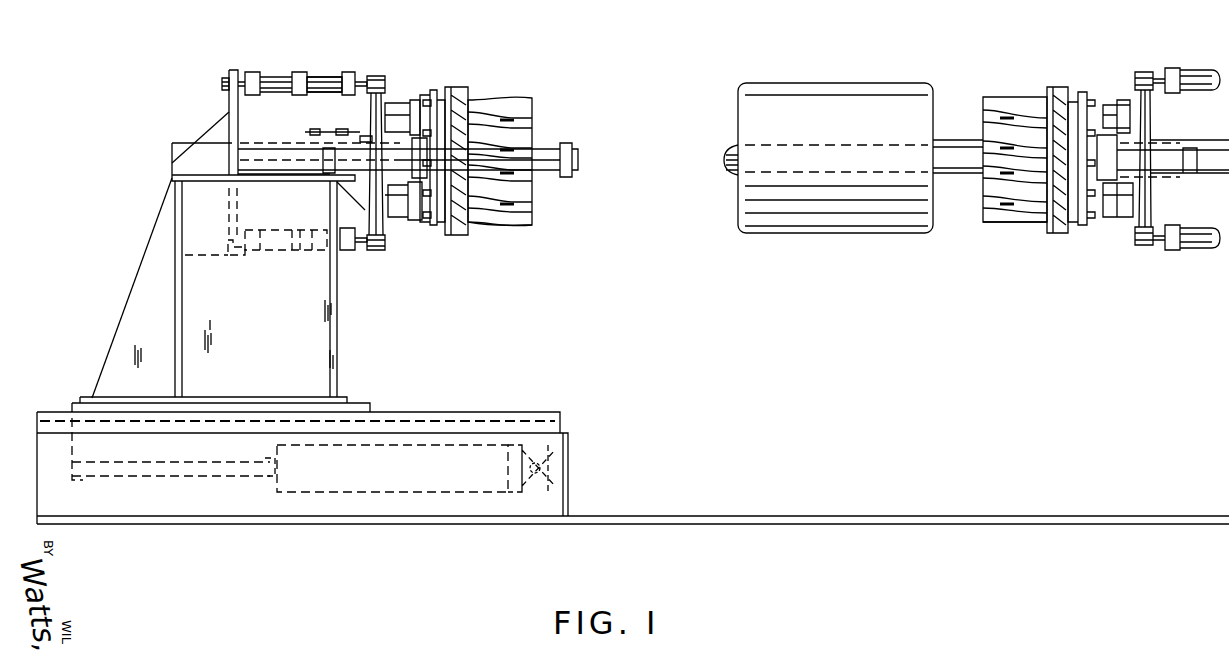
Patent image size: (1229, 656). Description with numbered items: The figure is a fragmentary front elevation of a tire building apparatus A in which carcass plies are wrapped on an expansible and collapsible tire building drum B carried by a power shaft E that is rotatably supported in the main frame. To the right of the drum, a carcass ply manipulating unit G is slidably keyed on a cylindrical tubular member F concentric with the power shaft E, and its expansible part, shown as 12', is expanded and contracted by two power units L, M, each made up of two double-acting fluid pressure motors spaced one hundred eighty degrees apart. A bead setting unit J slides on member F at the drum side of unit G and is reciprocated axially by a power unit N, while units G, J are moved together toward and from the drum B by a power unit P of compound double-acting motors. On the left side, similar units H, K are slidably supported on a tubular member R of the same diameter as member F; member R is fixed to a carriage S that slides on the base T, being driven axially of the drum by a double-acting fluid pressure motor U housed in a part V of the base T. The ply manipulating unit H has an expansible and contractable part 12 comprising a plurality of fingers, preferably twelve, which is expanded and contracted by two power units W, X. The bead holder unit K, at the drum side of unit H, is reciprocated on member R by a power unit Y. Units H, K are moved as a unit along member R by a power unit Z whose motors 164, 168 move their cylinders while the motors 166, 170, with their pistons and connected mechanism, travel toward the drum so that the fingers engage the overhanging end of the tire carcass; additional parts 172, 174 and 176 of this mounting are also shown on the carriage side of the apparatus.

The support post nut 172 is at (240, 68).
The motor 164 is at (265, 72).
The power unit Z is at (312, 65).
The motor 166 is at (338, 72).
The upright support post 176 is at (229, 100).
The power unit X is at (395, 108).
The bead holder unit K is at (463, 83).
The carcass ply manipulating unit H is at (504, 93).
The tubular member R is at (548, 146).
The power unit W is at (416, 229).
The expansible and contractable part 12 is at (505, 236).
The power unit Y is at (322, 165).
The hidden bracket 174 is at (240, 255).
The motor 168 is at (267, 250).
The motor 170 is at (347, 252).
The carriage S is at (337, 352).
The part of the base V is at (463, 402).
The tire building apparatus A is at (576, 469).
The fluid pressure-actuated motor U is at (343, 497).
The base T is at (790, 506).
The power shaft E is at (729, 144).
The tire building drum B is at (829, 239).
The cylindrical tubular member F is at (966, 134).
The carcass ply manipulating unit G is at (1026, 90).
The blade 12' is at (1015, 236).
The bead setting unit J is at (1063, 240).
The power unit M is at (1123, 112).
The power unit L is at (1113, 217).
The power unit N is at (1173, 163).
The power unit P is at (1213, 62).